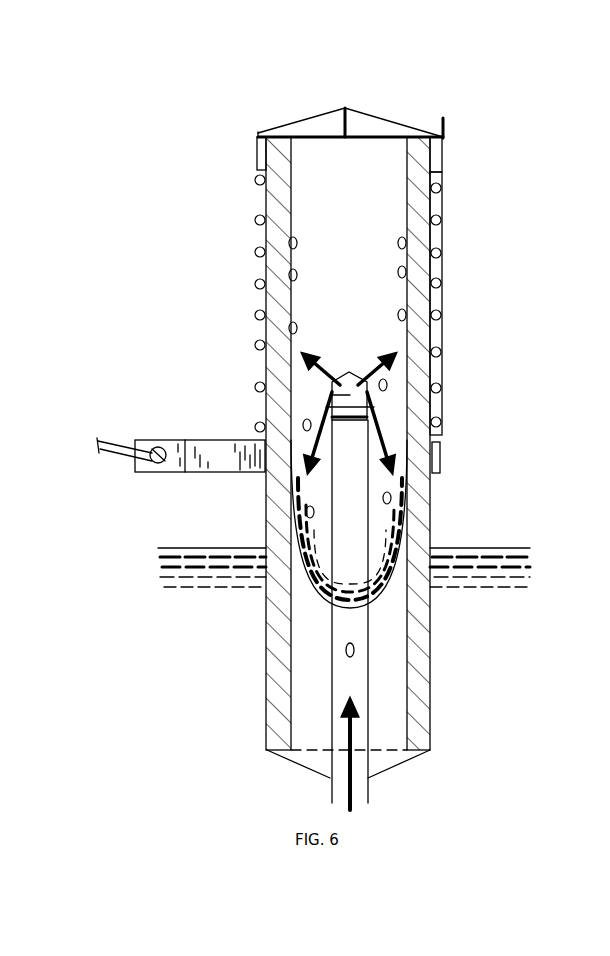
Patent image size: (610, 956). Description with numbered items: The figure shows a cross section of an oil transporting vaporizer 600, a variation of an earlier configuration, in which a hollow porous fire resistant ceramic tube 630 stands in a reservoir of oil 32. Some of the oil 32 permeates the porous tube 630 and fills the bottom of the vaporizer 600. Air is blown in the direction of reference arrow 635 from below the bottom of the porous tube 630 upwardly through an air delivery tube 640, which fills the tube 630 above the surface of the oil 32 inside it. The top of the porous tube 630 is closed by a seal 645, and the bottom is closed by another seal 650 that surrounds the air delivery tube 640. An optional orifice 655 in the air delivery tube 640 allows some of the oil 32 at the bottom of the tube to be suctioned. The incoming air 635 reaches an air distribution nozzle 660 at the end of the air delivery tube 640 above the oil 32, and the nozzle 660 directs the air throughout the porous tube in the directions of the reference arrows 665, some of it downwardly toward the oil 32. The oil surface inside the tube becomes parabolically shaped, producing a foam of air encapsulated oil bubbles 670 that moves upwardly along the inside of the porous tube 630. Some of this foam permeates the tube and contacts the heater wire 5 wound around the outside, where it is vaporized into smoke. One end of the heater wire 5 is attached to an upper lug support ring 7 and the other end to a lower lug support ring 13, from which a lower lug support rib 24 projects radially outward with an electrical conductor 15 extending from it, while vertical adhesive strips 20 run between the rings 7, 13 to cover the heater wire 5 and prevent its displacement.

The oil transporting vaporizer 600 is at (381, 443).
The heater wire 5 is at (255, 253).
The upper lug support ring 7 is at (443, 148).
The vertical strips of adhesive 20 is at (464, 443).
The lower lug support ring 13 is at (441, 456).
The seal 645 is at (315, 114).
The air encapsulated oil bubbles 670 is at (289, 241).
The air distribution nozzle 660 is at (330, 395).
The reference arrows 665 is at (303, 357).
The lower lug support rib 24 is at (220, 455).
The electrical conductor 15 is at (112, 453).
The oil 32 is at (465, 548).
The porous tube 630 is at (430, 693).
The air delivery tube 640 is at (332, 682).
The orifice 655 is at (346, 650).
The reference arrow 635 is at (330, 792).
The seal 650 is at (393, 768).